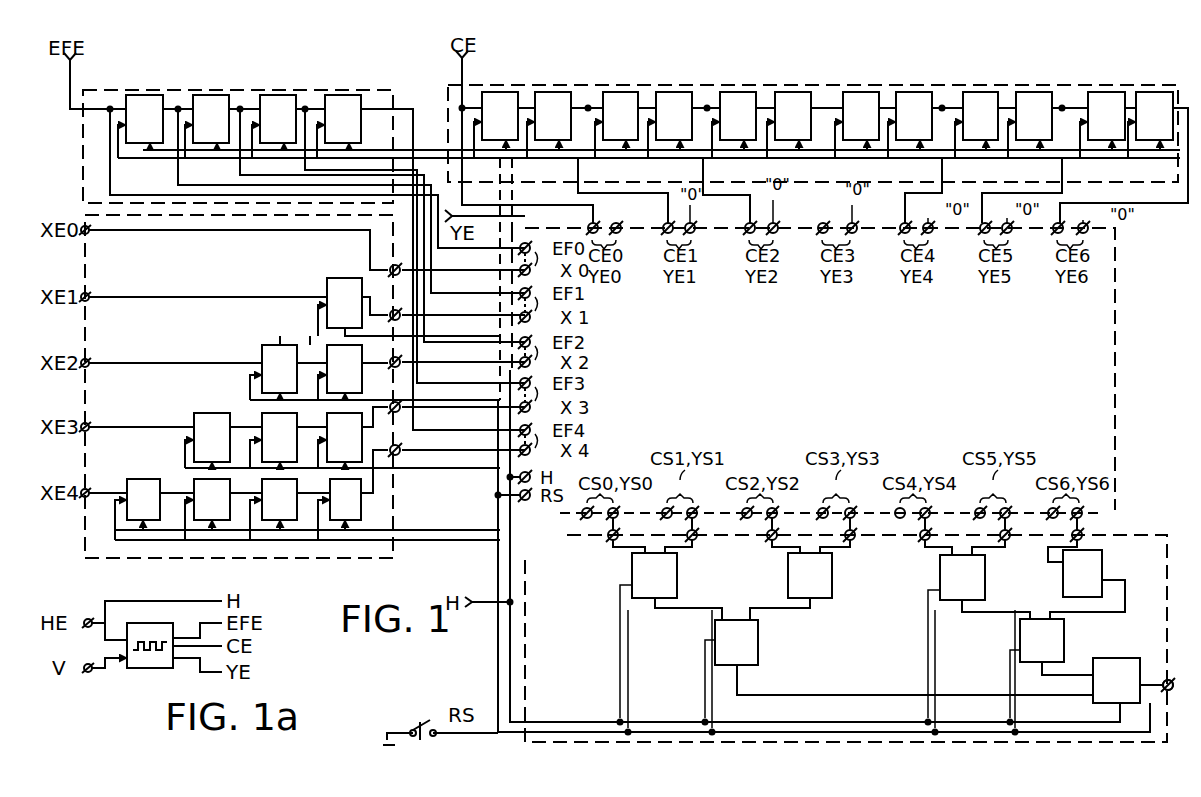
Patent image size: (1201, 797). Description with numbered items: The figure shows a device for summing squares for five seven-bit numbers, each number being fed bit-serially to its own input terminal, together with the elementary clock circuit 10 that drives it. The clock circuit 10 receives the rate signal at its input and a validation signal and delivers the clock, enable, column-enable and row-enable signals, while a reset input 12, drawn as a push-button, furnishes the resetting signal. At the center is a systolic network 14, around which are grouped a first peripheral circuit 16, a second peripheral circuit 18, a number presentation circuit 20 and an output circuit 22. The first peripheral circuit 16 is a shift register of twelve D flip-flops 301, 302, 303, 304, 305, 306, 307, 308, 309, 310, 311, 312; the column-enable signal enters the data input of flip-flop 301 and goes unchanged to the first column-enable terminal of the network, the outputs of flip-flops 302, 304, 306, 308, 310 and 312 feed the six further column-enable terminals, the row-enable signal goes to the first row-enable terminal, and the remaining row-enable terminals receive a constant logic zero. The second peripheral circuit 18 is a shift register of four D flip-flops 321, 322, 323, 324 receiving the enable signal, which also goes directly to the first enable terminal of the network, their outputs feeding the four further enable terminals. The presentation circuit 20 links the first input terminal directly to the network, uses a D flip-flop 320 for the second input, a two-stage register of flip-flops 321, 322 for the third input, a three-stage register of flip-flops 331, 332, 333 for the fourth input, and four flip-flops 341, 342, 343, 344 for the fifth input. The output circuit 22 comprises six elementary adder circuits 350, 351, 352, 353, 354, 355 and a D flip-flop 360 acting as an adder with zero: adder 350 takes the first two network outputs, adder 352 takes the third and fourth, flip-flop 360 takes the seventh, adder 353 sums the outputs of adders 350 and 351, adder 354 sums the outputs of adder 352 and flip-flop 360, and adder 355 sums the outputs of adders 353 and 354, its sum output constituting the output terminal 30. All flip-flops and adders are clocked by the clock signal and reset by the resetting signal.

In FIG. 1A, the clock circuit 10 is at (140, 668).
In FIG. 1, the reset input 12 is at (427, 716).
In FIG. 1, the systolic network 14 is at (1113, 320).
In FIG. 1, the first peripheral circuit 16 is at (574, 98).
In FIG. 1, the second peripheral circuit 18 is at (378, 98).
In FIG. 1, the number presentation circuit 20 is at (366, 558).
In FIG. 1, the output circuit 22 is at (1102, 533).
In FIG. 1, the output terminal 30 is at (1164, 680).
In FIG. 1, the D-flip-flop 301 is at (500, 96).
In FIG. 1, the D-flip-flop 302 is at (555, 96).
In FIG. 1, the D-flip-flop 303 is at (623, 96).
In FIG. 1, the D-flip-flop 304 is at (676, 98).
In FIG. 1, the D-flip-flop 305 is at (735, 96).
In FIG. 1, the D-flip-flop 306 is at (792, 96).
In FIG. 1, the D-flip-flop 307 is at (858, 96).
In FIG. 1, the D-flip-flop 308 is at (892, 96).
In FIG. 1, the D-flip-flop 309 is at (988, 97).
In FIG. 1, the D-flip-flop 310 is at (1034, 96).
In FIG. 1, the D-flip-flop 311 is at (1114, 96).
In FIG. 1, the D-flip-flop 312 is at (1162, 98).
In FIG. 1, the D-type flip-flop 320 is at (356, 268).
In FIG. 1, the D-flip-flop 321 is at (151, 98).
In FIG. 1, the D-flip-flop 322 is at (211, 98).
In FIG. 1, the D-flip-flop 323 is at (280, 98).
In FIG. 1, the D-flip-flop 324 is at (348, 98).
In FIG. 1, the D-flip-flop 331 is at (208, 414).
In FIG. 1, the D-flip-flop 332 is at (276, 413).
In FIG. 1, the D-flip-flop 333 is at (344, 439).
In FIG. 1, the flip-flop 341 is at (148, 492).
In FIG. 1, the flip-flop 342 is at (203, 512).
In FIG. 1, the flip-flop 343 is at (276, 512).
In FIG. 1, the flip-flop 344 is at (353, 506).
In FIG. 1, the elementary adder circuit 350 is at (677, 585).
In FIG. 1, the elementary adder circuit 351 is at (845, 585).
In FIG. 1, the elementary adder circuit 352 is at (940, 570).
In FIG. 1, the elementary adder circuit 353 is at (715, 635).
In FIG. 1, the elementary adder circuit 354 is at (1065, 641).
In FIG. 1, the elementary adder circuit 355 is at (1110, 658).
In FIG. 1, the D-type flip-flop 360 is at (1098, 554).